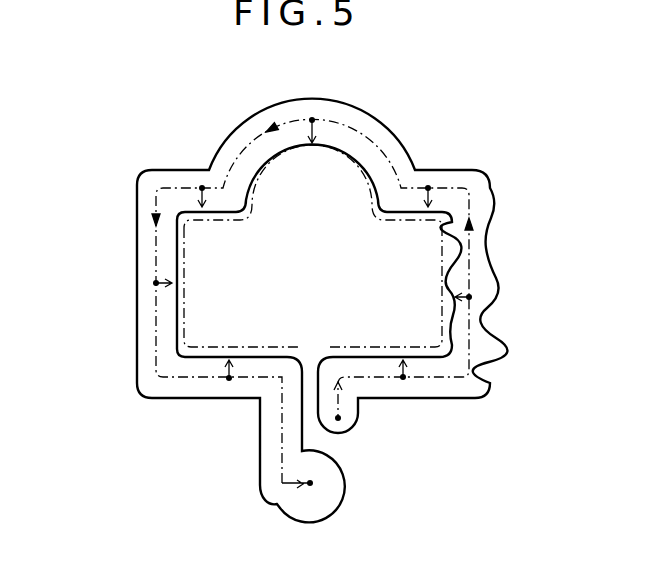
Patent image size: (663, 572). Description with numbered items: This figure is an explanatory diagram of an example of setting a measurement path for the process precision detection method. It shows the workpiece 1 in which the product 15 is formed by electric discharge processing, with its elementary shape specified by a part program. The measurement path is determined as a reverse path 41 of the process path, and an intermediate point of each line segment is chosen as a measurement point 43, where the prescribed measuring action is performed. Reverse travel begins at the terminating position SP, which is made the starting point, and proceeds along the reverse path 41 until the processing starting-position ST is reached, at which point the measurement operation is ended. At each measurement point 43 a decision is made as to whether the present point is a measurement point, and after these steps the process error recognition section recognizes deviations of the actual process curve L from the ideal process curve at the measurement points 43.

The workpiece 1 is at (490, 97).
The product 15 is at (186, 318).
The reverse path 41 is at (475, 352).
The measurement point 43 is at (403, 377).
The actual process curve L is at (492, 186).
The terminating position SP is at (338, 418).
The processing starting-position ST is at (310, 483).